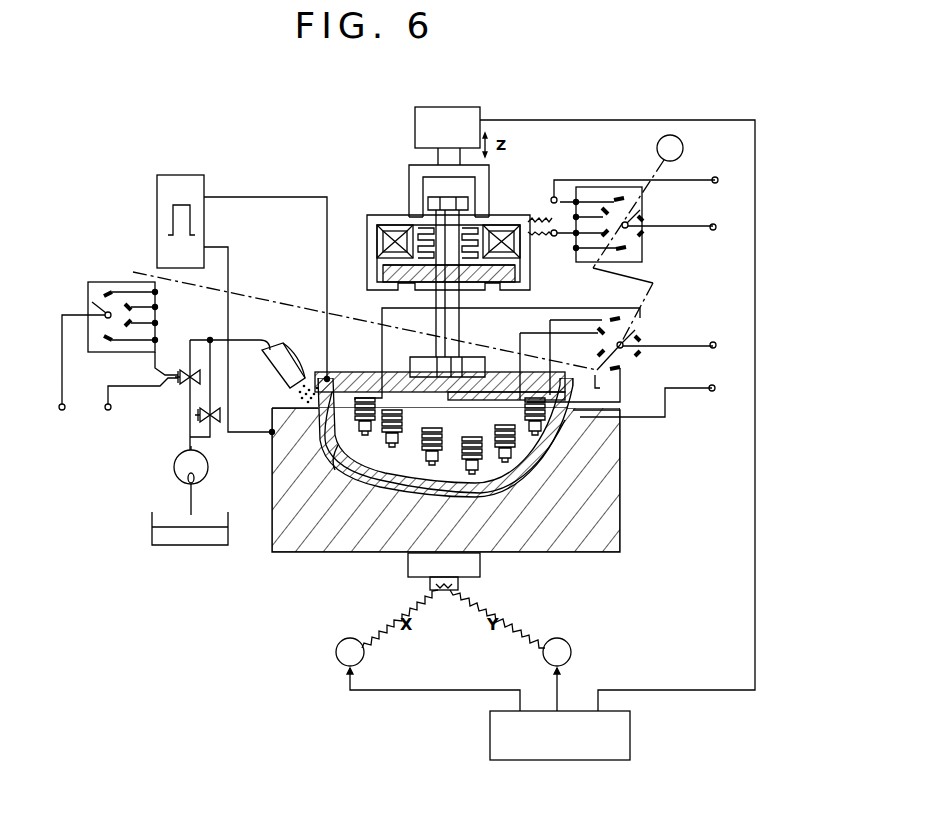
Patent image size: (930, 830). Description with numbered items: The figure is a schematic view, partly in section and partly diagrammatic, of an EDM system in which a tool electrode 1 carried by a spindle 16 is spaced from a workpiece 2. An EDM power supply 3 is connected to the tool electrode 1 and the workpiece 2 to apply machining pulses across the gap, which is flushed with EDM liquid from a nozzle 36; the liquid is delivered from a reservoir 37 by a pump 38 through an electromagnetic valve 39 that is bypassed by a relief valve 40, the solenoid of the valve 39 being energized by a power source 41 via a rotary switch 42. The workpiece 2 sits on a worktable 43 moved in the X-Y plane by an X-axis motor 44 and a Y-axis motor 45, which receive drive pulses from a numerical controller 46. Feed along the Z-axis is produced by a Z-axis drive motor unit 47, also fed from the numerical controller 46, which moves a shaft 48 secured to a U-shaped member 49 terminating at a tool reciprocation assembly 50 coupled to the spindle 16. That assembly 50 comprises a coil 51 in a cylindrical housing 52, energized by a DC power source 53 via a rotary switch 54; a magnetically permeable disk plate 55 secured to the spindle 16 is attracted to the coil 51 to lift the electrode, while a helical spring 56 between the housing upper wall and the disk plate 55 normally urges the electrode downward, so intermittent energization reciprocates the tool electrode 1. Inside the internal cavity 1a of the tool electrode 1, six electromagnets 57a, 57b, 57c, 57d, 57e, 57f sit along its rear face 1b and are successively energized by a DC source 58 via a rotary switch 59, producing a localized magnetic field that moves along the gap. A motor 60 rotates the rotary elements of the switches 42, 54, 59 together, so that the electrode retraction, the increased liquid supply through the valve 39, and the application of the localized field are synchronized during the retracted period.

The tool electrode 1 is at (568, 430).
The internal cavity 1a is at (340, 378).
The rear face 1b is at (336, 448).
The workpiece 2 is at (622, 489).
The EDM power supply 3 is at (157, 218).
The spindle 16 is at (461, 328).
The nozzle 36 is at (282, 383).
The reservoir 37 is at (220, 546).
The pump 38 is at (210, 471).
The electromagnetic valve 39 is at (180, 388).
The relief valve 40 is at (196, 420).
The power source 41 is at (92, 415).
The rotary switch 42 is at (88, 300).
The worktable 43 is at (482, 565).
The X-axis motor 44 is at (335, 655).
The Y-axis motor 45 is at (572, 656).
The numerical controller 46 is at (564, 760).
The Z-axis drive motor unit 47 is at (443, 107).
The shaft 48 is at (437, 157).
The U-shaped member 49 is at (490, 180).
The tool reciprocation assembly 50 is at (519, 257).
The coil 51 is at (392, 226).
The cylindrical housing 52 is at (530, 284).
The DC power source 53 is at (700, 206).
The rotary switch 54 is at (655, 240).
The magnetically permeable disk plate 55 is at (383, 272).
The helical spring 56 is at (474, 218).
The electromagnet 57a is at (360, 438).
The electromagnet 57b is at (390, 450).
The electromagnet 57c is at (430, 468).
The electromagnet 57d is at (475, 478).
The electromagnet 57e is at (515, 465).
The electromagnet 57f is at (548, 440).
The DC source 58 is at (722, 382).
The rotary switch 59 is at (642, 353).
The motor 60 is at (684, 148).